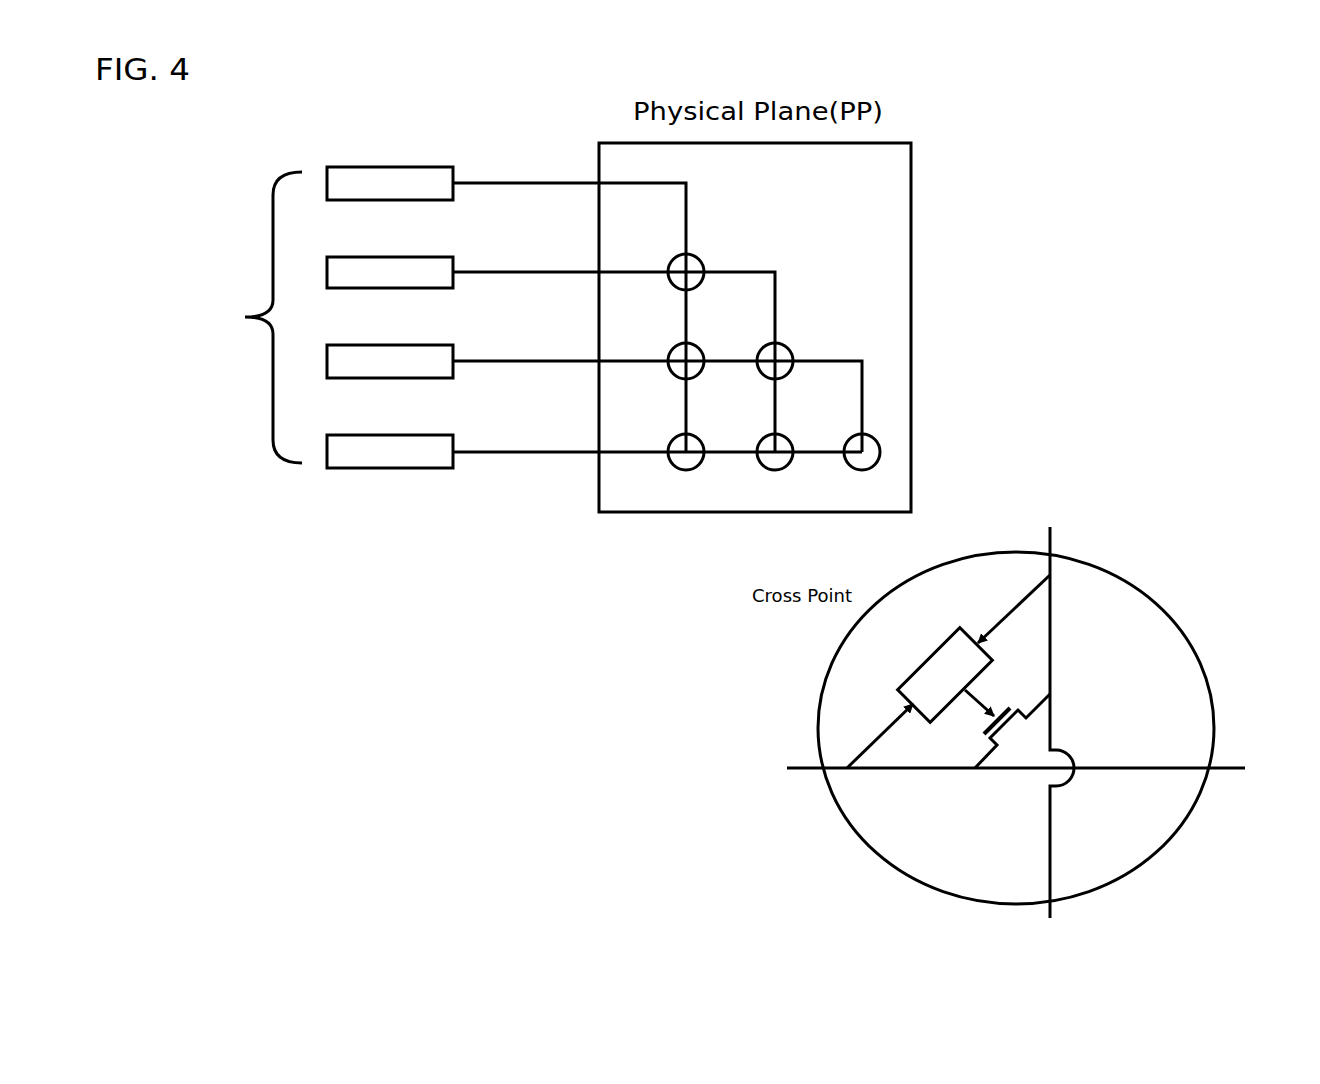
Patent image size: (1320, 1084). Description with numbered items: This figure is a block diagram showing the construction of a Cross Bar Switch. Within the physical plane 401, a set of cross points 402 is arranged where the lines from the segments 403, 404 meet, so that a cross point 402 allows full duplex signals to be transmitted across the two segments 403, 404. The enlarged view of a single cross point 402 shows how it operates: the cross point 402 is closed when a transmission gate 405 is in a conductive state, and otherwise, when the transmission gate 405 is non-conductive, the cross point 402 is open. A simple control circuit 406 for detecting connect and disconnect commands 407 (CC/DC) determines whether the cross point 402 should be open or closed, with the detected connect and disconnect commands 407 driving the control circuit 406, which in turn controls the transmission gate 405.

The physical plane 401 is at (913, 215).
The cross point 402 is at (699, 258).
The segment 403 is at (508, 317).
The segment 404 is at (528, 317).
The transmission gate 405 is at (1010, 709).
The control circuit 406 is at (907, 680).
The connect and disconnect commands 407 is at (908, 695).